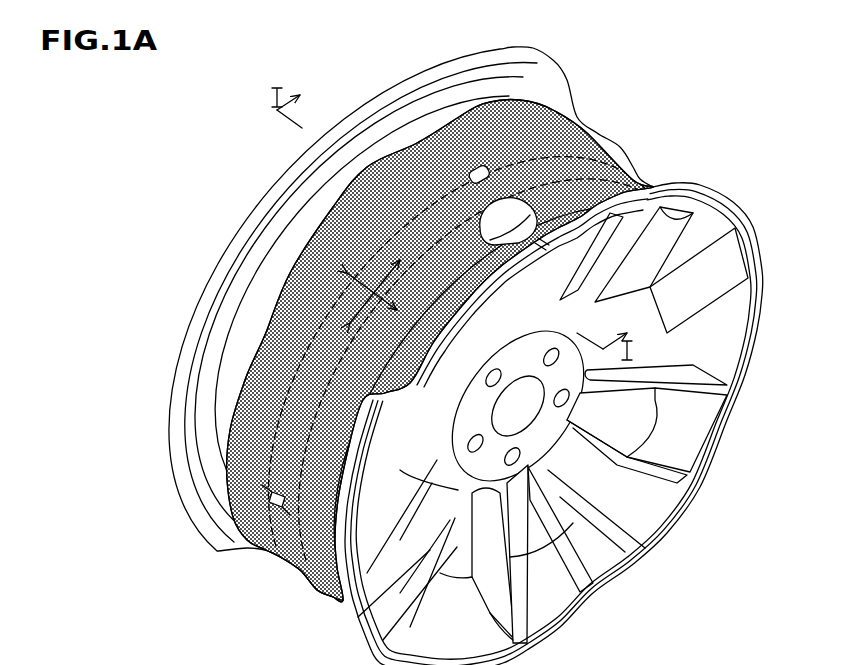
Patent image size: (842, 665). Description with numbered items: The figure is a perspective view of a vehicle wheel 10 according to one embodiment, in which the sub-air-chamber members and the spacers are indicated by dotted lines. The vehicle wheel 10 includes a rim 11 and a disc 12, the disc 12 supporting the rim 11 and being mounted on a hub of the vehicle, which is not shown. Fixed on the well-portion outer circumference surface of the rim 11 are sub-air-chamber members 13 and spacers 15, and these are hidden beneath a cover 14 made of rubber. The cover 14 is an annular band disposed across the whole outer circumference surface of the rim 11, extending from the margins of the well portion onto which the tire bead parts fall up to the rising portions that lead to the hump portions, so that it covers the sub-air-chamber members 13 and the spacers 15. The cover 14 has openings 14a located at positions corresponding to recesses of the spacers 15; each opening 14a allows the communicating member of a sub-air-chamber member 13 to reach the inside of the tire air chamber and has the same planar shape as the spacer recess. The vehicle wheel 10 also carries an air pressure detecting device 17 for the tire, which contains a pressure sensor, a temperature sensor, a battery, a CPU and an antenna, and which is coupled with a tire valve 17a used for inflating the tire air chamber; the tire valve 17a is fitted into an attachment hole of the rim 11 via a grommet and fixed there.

The vehicle wheel 10 is at (213, 222).
The rim 11 is at (678, 187).
The disc 12 is at (543, 418).
The sub-air-chamber member 13 is at (353, 213).
The cover 14 is at (620, 150).
The opening 14a is at (475, 160).
The spacer 15 is at (453, 140).
The air pressure detecting device 17 is at (520, 200).
The tire valve 17a is at (620, 157).